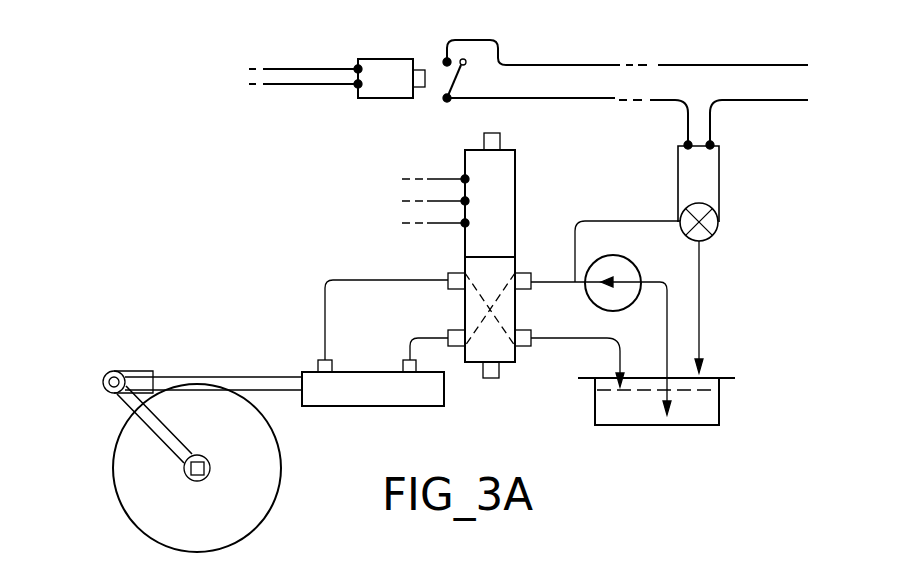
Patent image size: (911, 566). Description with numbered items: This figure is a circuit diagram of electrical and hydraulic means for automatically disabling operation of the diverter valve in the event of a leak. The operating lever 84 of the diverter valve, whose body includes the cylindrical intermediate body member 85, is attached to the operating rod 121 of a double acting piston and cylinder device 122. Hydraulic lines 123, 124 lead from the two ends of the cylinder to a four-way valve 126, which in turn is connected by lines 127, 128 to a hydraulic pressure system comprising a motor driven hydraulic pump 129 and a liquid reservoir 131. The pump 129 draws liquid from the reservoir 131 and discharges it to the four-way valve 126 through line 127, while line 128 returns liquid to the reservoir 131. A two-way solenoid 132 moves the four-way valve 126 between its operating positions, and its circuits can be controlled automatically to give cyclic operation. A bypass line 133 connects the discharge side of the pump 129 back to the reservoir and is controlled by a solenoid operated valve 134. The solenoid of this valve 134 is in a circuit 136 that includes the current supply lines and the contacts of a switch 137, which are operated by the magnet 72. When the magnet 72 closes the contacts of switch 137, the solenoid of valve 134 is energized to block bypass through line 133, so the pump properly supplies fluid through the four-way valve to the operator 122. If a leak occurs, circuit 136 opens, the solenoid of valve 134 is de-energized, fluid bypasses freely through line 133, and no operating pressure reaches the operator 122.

The magnet 72 is at (398, 105).
The operating lever 84 is at (159, 439).
The cylindrical intermediate body member 85 is at (197, 475).
The operating rod 121 is at (158, 376).
The double acting piston and cylinder device 122 is at (363, 408).
The hydraulic line 123 is at (356, 279).
The hydraulic line 124 is at (422, 337).
The four-way valve 126 is at (474, 362).
The line 127 is at (556, 282).
The line 128 is at (584, 338).
The motor driven hydraulic pump 129 is at (623, 259).
The liquid reservoir 131 is at (719, 405).
The two-way solenoid 132 is at (487, 247).
The bypass line 133 is at (612, 221).
The solenoid operated valve 134 is at (719, 222).
The circuit 136 is at (568, 80).
The switch 137 is at (433, 60).